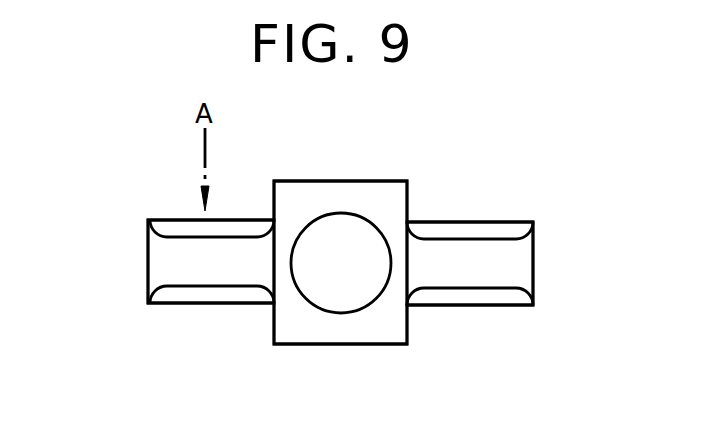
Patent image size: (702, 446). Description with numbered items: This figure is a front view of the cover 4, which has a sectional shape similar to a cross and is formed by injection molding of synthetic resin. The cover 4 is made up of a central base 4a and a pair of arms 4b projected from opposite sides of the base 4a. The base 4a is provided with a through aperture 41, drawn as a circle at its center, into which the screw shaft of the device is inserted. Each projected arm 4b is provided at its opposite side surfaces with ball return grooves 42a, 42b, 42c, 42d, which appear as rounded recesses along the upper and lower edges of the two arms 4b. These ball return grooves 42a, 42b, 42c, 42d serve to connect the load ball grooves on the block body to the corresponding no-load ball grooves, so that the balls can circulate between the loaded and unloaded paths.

The cover 4 is at (410, 181).
The base 4a is at (334, 190).
The arm 4b is at (157, 257).
The through aperture 41 is at (325, 306).
The ball return groove 42a is at (172, 228).
The ball return groove 42b is at (198, 299).
The ball return groove 42c is at (505, 297).
The ball return groove 42d is at (482, 231).